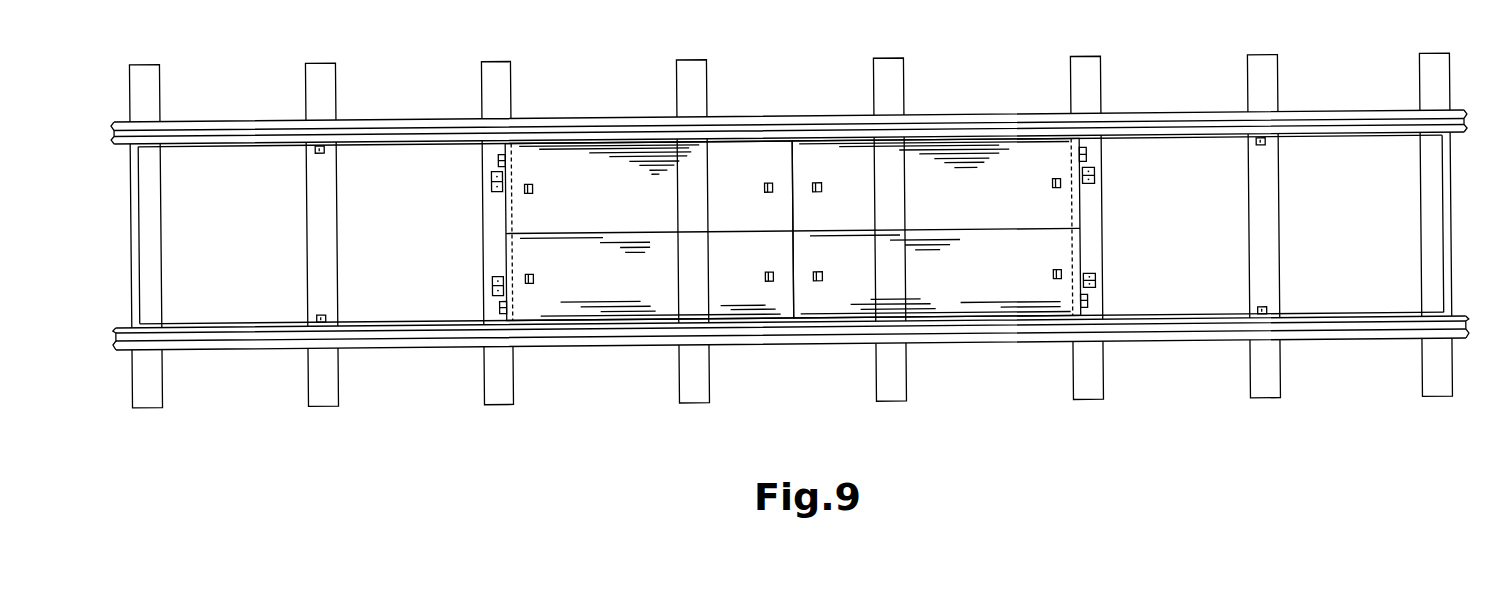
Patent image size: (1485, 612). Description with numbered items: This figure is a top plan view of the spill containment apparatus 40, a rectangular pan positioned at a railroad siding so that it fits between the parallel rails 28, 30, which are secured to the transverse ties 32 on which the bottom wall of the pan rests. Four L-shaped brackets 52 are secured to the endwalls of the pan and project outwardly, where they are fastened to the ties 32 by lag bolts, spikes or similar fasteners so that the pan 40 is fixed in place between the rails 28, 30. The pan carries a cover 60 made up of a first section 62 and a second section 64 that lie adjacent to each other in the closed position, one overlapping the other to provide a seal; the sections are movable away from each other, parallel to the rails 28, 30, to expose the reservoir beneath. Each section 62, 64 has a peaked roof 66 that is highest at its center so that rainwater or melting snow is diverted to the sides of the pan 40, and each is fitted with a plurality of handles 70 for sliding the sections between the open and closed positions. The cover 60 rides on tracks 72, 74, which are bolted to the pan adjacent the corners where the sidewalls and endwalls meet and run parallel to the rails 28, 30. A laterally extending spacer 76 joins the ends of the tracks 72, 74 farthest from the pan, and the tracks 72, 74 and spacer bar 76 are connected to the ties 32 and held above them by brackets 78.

The rail 28 is at (1145, 330).
The rail 30 is at (1140, 125).
The ties 32 is at (317, 75).
The spill containment apparatus 40 is at (934, 88).
The L-shaped brackets 52 is at (492, 178).
The cover 60 is at (742, 158).
The first section 62 is at (564, 163).
The second section 64 is at (988, 161).
The peaked roof 66 is at (657, 215).
The handles 70 is at (763, 187).
The track 72 is at (378, 322).
The track 74 is at (413, 147).
The spacer 76 is at (142, 240).
The brackets 78 is at (322, 312).